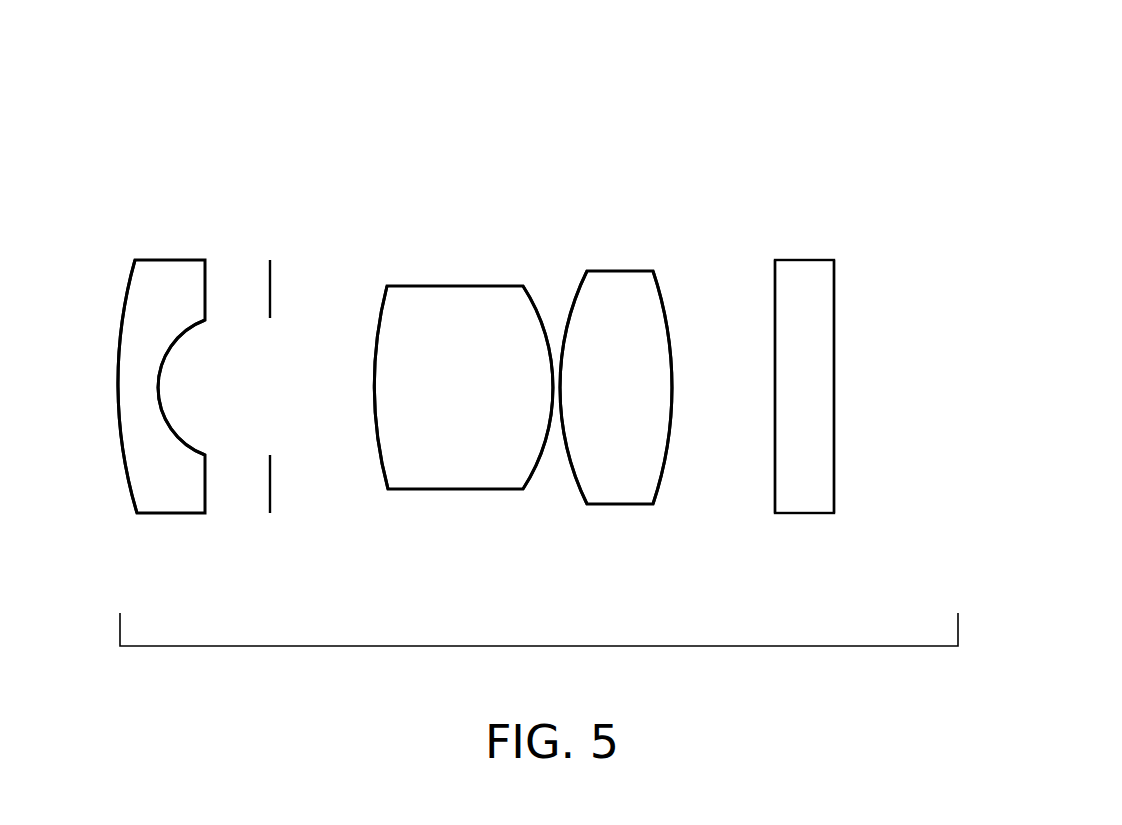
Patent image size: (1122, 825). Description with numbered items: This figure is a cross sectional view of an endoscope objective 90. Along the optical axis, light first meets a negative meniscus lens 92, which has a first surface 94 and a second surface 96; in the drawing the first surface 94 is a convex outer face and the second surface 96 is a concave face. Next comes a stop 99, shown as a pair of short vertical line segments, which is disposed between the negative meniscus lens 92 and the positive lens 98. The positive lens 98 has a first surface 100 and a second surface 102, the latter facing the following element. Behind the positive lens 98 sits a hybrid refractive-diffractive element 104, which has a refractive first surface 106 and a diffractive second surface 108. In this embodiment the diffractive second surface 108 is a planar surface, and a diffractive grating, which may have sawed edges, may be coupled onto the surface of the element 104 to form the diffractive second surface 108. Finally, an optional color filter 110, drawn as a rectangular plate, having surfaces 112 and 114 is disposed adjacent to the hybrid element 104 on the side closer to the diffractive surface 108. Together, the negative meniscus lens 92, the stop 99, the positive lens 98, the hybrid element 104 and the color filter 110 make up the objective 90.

The objective 90 is at (777, 75).
The negative meniscus lens 92 is at (178, 260).
The first surface 94 is at (118, 363).
The second surface 96 is at (163, 368).
The positive lens 98 is at (440, 286).
The stop 99 is at (272, 483).
The first surface 100 is at (377, 370).
The second surface 102 is at (537, 307).
The hybrid refractive-diffractive element 104 is at (618, 271).
The refractive first surface 106 is at (581, 487).
The diffractive second surface 108 is at (672, 387).
The color filter 110 is at (803, 260).
The surface 112 is at (775, 303).
The surface 114 is at (834, 303).